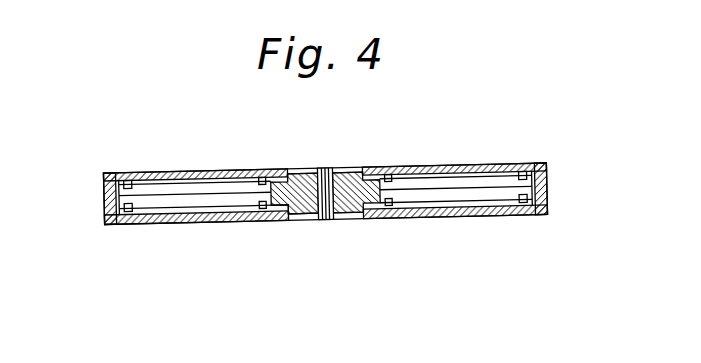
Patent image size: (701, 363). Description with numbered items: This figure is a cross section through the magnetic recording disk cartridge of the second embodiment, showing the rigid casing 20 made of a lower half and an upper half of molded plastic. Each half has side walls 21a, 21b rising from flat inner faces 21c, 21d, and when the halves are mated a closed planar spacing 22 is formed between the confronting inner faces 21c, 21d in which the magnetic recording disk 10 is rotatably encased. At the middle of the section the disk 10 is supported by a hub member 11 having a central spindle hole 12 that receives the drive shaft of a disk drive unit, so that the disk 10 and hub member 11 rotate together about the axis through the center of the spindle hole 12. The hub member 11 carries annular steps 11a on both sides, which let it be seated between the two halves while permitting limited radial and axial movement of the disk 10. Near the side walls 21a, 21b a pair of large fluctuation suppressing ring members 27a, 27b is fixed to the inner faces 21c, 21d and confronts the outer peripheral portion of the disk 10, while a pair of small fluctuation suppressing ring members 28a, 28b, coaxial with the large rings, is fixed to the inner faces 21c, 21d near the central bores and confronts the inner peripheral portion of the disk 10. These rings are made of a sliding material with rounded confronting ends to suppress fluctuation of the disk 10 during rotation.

The magnetic recording disk 10 is at (441, 166).
The hub member 11 is at (306, 215).
The annular steps 11a is at (278, 218).
The central spindle hole 12 is at (326, 168).
The rigid casing 20 is at (487, 157).
The side walls of lower half 21a is at (544, 199).
The side walls of upper half 21b is at (541, 174).
The inner face of lower half 21c is at (199, 208).
The inner face of upper half 21d is at (206, 183).
The closed planar spacing 22 is at (456, 214).
The large fluctuation suppressing ring member 27a is at (128, 213).
The large fluctuation suppressing ring member 27b is at (127, 180).
The small fluctuation suppressing ring member 28a is at (261, 210).
The small fluctuation suppressing ring member 28b is at (264, 178).